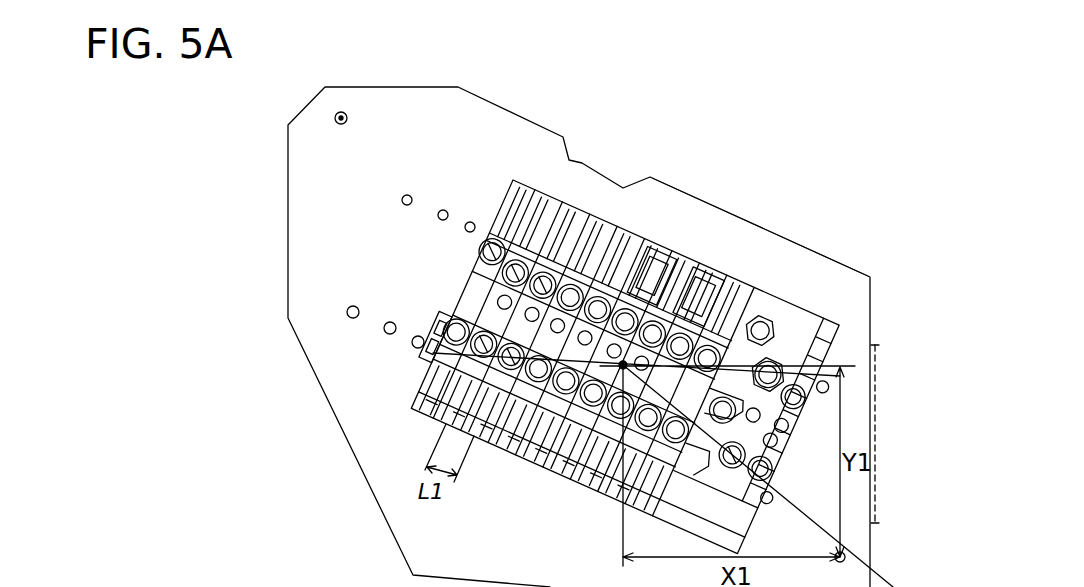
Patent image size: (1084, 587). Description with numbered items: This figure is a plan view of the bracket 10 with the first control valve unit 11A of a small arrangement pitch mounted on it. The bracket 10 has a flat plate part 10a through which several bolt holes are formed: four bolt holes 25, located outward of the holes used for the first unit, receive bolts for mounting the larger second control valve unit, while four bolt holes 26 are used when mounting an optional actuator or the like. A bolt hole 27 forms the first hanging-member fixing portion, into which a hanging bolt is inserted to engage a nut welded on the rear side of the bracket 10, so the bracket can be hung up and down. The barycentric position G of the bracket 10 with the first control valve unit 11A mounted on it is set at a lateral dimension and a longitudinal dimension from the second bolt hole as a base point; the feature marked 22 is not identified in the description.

The bracket 10 is at (760, 216).
The flat plate part 10a is at (797, 260).
The first control valve unit 11A is at (570, 265).
The support point 22 is at (774, 476).
The bolt holes 25 is at (474, 222).
The bolt holes 26 is at (409, 196).
The bolt hole 27 is at (487, 240).
The barycentric position G is at (625, 360).